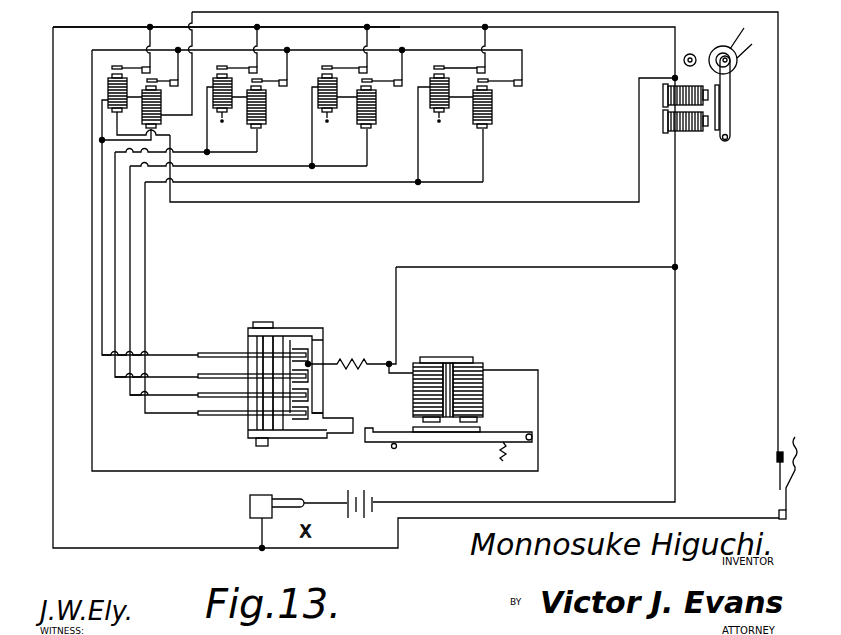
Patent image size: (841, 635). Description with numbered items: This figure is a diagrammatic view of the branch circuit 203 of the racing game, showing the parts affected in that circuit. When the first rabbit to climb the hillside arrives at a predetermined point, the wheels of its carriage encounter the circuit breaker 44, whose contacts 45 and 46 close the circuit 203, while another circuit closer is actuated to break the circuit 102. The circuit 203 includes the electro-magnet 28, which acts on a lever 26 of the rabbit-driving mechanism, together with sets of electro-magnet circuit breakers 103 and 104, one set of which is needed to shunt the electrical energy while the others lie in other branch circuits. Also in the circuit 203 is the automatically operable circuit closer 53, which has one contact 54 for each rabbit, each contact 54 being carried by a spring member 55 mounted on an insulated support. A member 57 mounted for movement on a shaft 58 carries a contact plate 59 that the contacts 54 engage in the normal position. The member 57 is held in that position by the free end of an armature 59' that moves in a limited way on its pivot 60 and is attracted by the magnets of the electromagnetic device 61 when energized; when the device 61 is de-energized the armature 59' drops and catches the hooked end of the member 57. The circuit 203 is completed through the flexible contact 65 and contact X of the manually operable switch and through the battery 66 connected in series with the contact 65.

The lever 26 is at (729, 107).
The electro-magnet 28 is at (699, 136).
The circuit breaker 44 is at (777, 513).
The contact 45 is at (795, 466).
The contact 46 is at (772, 465).
The automatically operable circuit closer 53 is at (245, 328).
The contacts 54 is at (312, 352).
The spring members 55 is at (213, 372).
The member 57 is at (318, 327).
The shaft 58 is at (270, 447).
The contact plate 59 is at (279, 363).
The armature 59' is at (446, 444).
The pivot 60 is at (535, 436).
The electromagnetic device 61 is at (484, 395).
The flexible contact 65 is at (248, 500).
The battery 66 is at (374, 498).
The circuit 102 is at (599, 28).
The electro-magnet circuit breaker 103 is at (108, 98).
The electro-magnet circuit breaker 104 is at (161, 118).
The circuit 203 is at (49, 245).